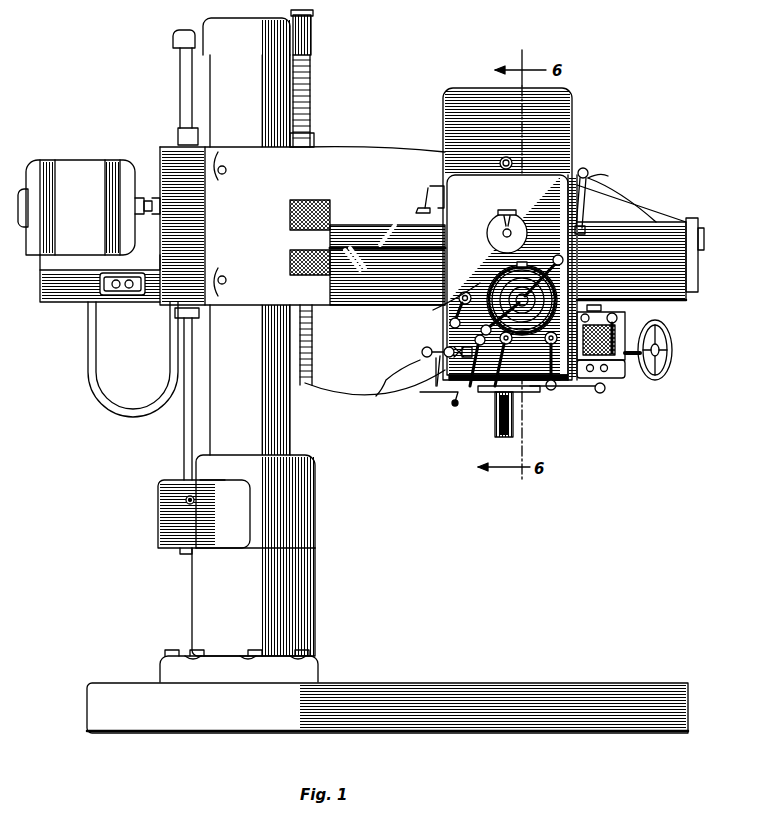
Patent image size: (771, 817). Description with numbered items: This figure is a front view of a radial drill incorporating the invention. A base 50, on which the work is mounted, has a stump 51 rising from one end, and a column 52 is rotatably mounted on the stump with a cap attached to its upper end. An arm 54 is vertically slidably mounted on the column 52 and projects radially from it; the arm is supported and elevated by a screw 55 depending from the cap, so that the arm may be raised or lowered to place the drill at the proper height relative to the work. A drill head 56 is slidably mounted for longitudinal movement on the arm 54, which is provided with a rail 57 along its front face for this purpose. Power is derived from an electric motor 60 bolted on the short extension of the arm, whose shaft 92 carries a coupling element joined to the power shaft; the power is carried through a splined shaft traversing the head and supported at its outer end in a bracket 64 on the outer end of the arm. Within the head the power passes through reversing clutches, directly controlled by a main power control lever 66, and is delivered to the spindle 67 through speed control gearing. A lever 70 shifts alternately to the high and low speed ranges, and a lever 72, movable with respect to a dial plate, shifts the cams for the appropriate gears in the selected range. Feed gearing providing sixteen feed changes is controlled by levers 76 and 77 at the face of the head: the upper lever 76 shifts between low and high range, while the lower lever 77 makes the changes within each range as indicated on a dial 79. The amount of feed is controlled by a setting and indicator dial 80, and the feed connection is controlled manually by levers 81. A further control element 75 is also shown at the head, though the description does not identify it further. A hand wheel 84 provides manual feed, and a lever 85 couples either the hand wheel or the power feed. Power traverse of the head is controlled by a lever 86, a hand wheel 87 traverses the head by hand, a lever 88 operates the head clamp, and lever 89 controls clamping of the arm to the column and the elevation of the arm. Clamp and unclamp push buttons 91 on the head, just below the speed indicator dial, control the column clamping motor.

The base 50 is at (583, 692).
The stump 51 is at (305, 613).
The column 52 is at (297, 427).
The arm 54 is at (349, 160).
The screw 55 is at (308, 50).
The drill head 56 is at (568, 184).
The rail 57 is at (380, 300).
The electric motor 60 is at (78, 178).
The bracket 64 is at (702, 230).
The main power control lever 66 is at (583, 390).
The spindle 67 is at (513, 416).
The lever 70 is at (603, 308).
The lever 72 is at (620, 320).
The plate 75 is at (612, 366).
The lever 76 is at (450, 324).
The lever 77 is at (437, 378).
The dial 79 is at (375, 378).
The setting and indicator dial 80 is at (433, 310).
The lever 81 is at (558, 256).
The hand wheel 84 is at (448, 394).
The lever 85 is at (471, 390).
The lever 86 is at (552, 392).
The hand wheel 87 is at (672, 350).
The lever 88 is at (622, 198).
The lever 89 is at (422, 352).
The push buttons 91 is at (606, 372).
The shaft 92 is at (145, 195).